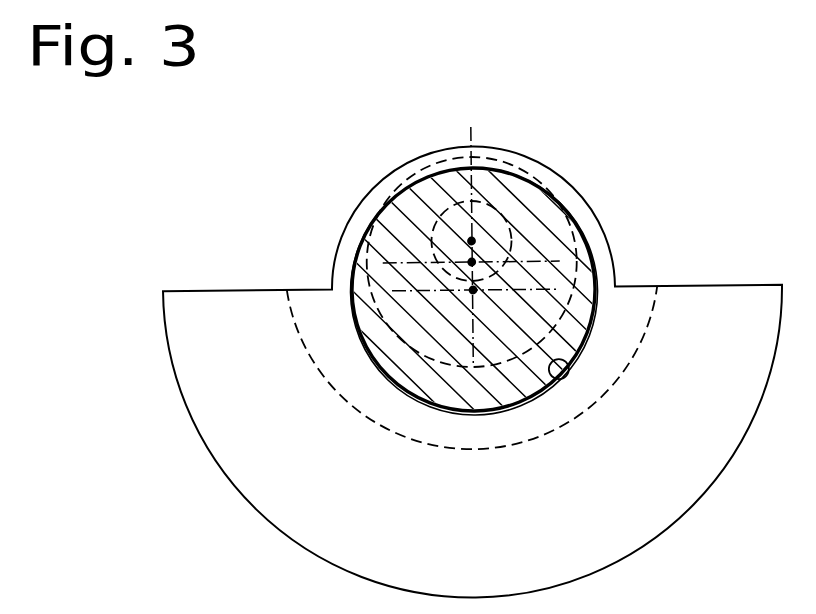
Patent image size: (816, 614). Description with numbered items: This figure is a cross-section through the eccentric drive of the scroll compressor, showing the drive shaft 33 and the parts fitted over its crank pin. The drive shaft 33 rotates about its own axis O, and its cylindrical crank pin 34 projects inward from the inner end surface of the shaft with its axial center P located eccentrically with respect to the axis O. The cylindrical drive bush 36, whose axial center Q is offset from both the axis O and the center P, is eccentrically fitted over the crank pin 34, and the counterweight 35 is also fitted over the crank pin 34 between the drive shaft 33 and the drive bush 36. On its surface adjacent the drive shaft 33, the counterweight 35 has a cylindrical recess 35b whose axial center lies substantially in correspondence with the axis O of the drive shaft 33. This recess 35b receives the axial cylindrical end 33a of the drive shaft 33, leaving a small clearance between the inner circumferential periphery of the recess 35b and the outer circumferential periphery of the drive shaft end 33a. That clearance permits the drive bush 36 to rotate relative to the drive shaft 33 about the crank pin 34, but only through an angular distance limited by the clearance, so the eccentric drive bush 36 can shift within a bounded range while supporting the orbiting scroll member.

The drive shaft 33 is at (352, 280).
The axial cylindrical end of the drive shaft 33a is at (510, 411).
The crank pin 34 is at (437, 162).
The counterweight 35 is at (598, 245).
The cylindrical recess 35b is at (567, 362).
The drive bush 36 is at (488, 158).
The axial center of the crank pin P is at (476, 236).
The axial center of the drive bush Q is at (472, 262).
The axis of the drive shaft O is at (477, 292).